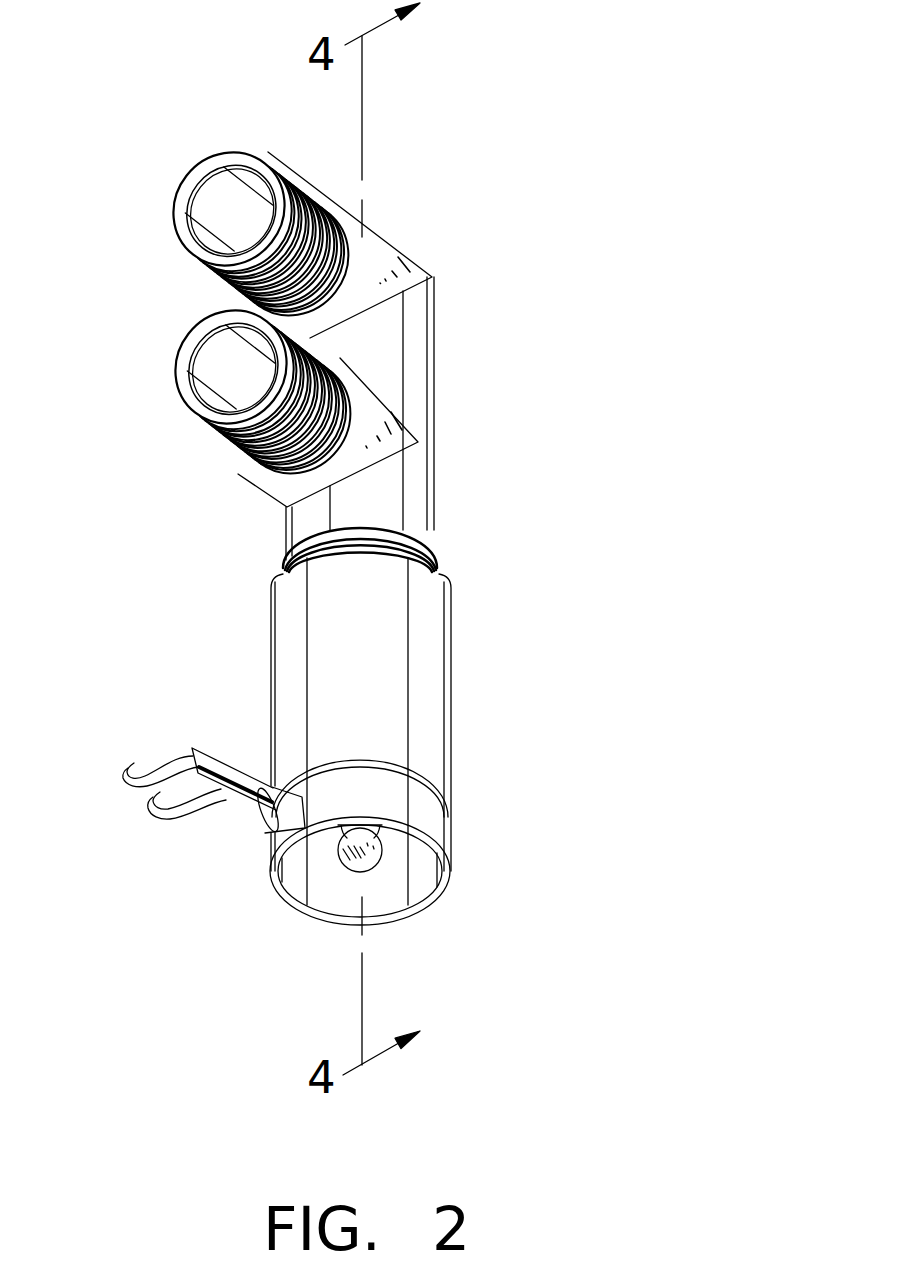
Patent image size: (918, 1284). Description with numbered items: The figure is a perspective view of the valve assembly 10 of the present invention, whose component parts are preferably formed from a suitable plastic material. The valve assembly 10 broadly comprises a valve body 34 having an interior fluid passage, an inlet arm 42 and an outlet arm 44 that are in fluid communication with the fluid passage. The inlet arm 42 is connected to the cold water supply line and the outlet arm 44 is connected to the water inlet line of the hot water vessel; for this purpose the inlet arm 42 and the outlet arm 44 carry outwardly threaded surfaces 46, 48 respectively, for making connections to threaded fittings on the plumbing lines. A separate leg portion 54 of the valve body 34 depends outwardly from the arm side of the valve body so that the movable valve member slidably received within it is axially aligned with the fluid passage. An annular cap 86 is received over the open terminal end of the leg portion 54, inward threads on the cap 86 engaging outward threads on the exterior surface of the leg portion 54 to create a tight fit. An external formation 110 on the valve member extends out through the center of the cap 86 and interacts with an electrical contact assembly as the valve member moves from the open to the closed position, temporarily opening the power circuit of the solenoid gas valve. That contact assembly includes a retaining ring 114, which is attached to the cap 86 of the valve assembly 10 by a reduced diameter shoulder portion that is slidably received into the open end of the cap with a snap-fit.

The valve assembly 10 is at (612, 374).
The valve body 34 is at (458, 378).
The inlet arm 42 is at (367, 420).
The outlet arm 44 is at (380, 258).
The outwardly threaded surface 46 is at (222, 302).
The outwardly threaded surface 48 is at (224, 459).
The leg portion 54 is at (405, 512).
The annular cap 86 is at (457, 690).
The external formation 110 is at (350, 850).
The retaining ring 114 is at (467, 822).